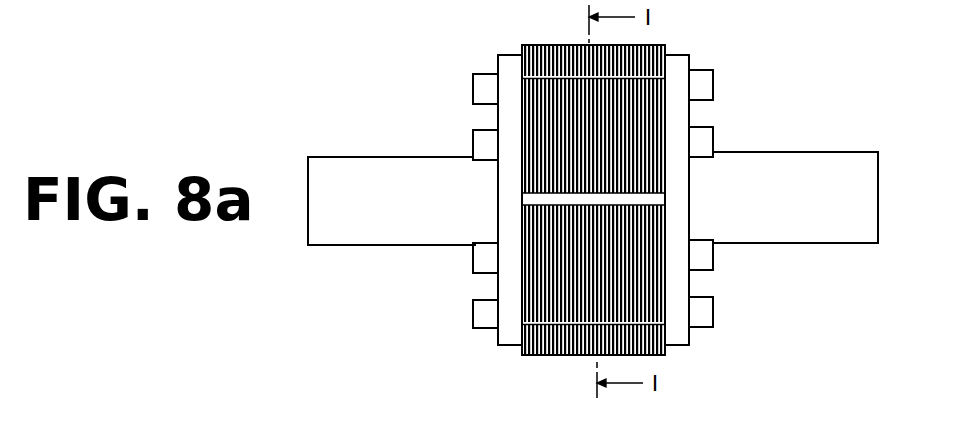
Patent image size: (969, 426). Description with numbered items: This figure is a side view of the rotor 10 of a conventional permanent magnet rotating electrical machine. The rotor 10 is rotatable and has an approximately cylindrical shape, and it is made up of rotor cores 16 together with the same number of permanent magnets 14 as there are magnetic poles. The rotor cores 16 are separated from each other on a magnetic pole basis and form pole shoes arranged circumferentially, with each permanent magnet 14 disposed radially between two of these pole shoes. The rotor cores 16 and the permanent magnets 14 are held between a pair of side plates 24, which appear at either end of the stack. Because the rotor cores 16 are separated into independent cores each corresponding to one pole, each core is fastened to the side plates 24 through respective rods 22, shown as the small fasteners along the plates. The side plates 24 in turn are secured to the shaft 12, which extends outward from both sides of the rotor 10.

The rotor 10 is at (402, 84).
The shaft 12 is at (797, 170).
The permanent magnet 14 is at (645, 196).
The rotor core 16 is at (640, 117).
The rod 22 is at (482, 142).
The side plate 24 is at (675, 224).